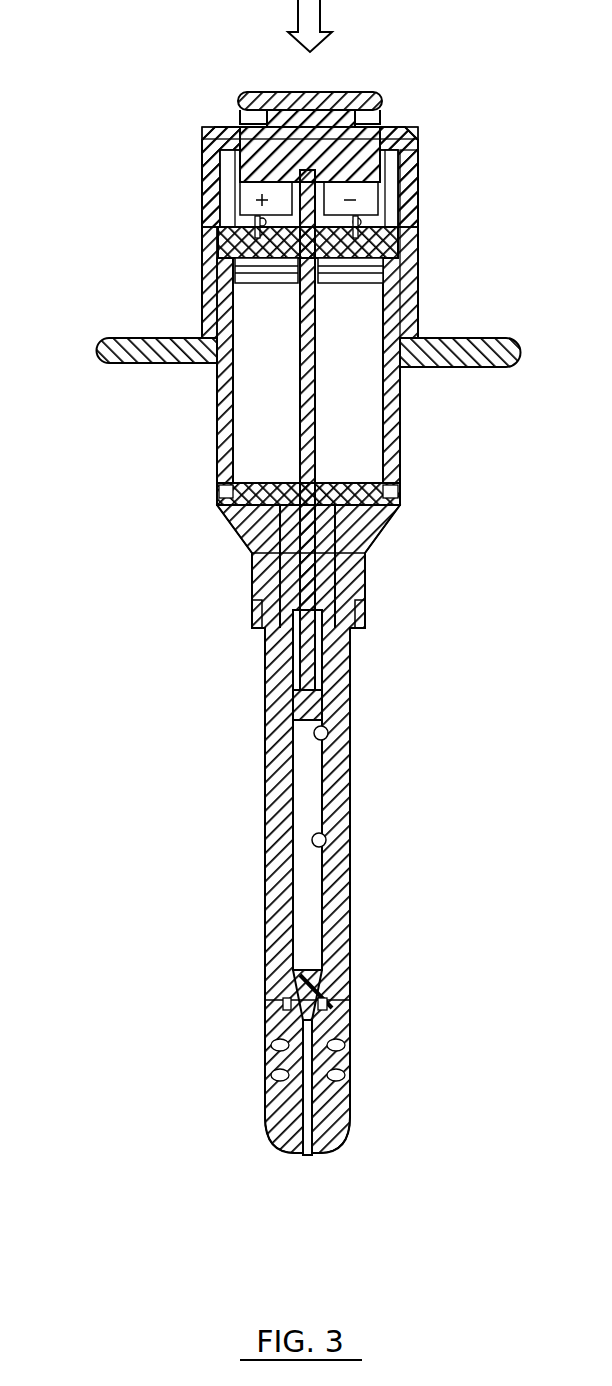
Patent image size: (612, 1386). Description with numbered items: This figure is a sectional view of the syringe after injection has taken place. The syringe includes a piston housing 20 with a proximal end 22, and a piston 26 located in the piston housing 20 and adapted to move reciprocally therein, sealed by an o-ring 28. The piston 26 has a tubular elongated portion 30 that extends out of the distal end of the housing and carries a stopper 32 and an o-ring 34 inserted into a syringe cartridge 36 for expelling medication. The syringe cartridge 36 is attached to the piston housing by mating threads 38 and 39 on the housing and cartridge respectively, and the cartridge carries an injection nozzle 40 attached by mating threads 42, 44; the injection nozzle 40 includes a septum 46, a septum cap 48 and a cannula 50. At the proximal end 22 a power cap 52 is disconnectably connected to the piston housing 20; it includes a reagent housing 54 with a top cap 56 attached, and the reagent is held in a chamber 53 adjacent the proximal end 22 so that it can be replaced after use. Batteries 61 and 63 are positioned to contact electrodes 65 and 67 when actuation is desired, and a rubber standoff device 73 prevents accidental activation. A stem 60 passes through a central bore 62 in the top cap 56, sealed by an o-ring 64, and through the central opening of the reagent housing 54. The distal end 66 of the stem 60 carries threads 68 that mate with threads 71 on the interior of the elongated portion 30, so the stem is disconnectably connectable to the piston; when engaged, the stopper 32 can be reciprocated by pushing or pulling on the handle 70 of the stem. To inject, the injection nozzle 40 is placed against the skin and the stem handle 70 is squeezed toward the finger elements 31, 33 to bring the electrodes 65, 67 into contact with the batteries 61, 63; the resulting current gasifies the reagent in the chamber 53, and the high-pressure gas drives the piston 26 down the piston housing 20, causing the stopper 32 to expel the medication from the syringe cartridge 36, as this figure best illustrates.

The piston housing 20 is at (400, 440).
The proximal end 22 is at (215, 270).
The piston 26 is at (375, 483).
The o-ring 28 is at (399, 504).
The elongated portion 30 is at (352, 853).
The finger element 31 is at (105, 352).
The stopper 32 is at (337, 1032).
The finger element 33 is at (515, 347).
The o-ring 34 is at (238, 672).
The syringe cartridge 36 is at (352, 786).
The mating threads 38 is at (252, 573).
The mating threads 39 is at (252, 612).
The injection nozzle 40 is at (368, 1085).
The mating threads 42 is at (268, 1071).
The mating threads 44 is at (268, 1046).
The septum 46 is at (348, 1118).
The septum cap 48 is at (268, 1115).
The cannula 50 is at (307, 1152).
The power cap 52 is at (148, 168).
The chamber 53 is at (205, 283).
The reagent housing 54 is at (204, 305).
The top cap 56 is at (392, 133).
The stem 60 is at (317, 335).
The battery 61 is at (200, 150).
The central bore 62 is at (240, 150).
The battery 63 is at (418, 170).
The o-ring 64 is at (418, 140).
The electrode 65 is at (215, 233).
The distal end 66 is at (352, 745).
The electrode 67 is at (405, 240).
The threads 68 is at (335, 695).
The handle 70 is at (372, 103).
The threads 71 is at (272, 730).
The rubber standoff device 73 is at (217, 197).